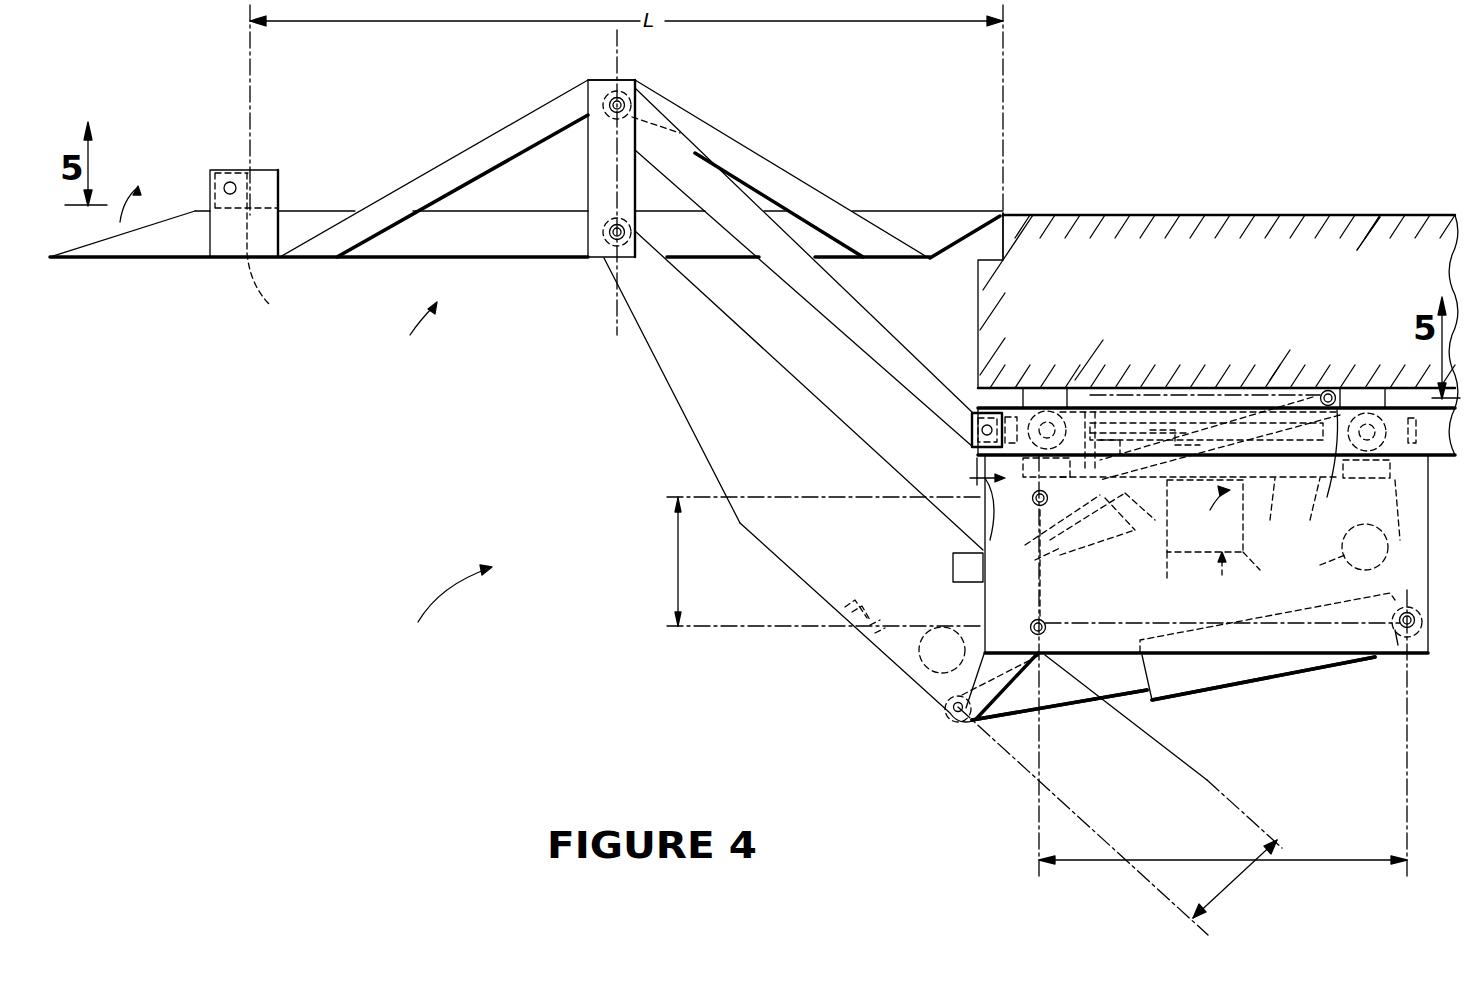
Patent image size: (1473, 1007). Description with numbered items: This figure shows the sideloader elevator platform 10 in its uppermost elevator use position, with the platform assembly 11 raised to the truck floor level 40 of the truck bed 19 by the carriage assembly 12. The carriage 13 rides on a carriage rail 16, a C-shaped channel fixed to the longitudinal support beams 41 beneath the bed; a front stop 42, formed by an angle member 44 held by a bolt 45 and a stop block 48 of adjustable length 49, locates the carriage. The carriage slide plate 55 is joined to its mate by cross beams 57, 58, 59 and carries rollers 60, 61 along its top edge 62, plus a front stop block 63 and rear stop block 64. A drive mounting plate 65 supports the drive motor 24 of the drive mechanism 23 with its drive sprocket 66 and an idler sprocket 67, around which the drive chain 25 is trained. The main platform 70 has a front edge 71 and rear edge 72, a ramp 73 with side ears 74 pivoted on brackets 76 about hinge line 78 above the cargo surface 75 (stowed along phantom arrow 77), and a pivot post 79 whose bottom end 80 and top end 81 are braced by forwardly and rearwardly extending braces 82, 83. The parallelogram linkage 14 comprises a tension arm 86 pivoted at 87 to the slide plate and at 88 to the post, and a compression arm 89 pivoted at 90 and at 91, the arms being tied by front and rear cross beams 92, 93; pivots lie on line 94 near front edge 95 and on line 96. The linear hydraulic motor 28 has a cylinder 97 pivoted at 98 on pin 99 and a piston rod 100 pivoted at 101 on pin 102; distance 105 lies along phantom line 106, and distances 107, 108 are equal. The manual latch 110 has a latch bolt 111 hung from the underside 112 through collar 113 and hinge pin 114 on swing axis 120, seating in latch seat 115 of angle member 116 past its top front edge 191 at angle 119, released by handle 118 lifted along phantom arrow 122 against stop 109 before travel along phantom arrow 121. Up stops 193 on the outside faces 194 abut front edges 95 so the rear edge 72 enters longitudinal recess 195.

The sideloader elevator platform 10 is at (446, 611).
The platform assembly 11 is at (412, 327).
The carriage assembly 12 is at (980, 787).
The carriage 13 is at (1326, 658).
The parallelogram linkage 14 is at (680, 412).
The carriage rail 16 is at (1450, 458).
The truck bed 19 is at (1395, 225).
The drive mechanism 23 is at (1222, 576).
The drive motor 24 is at (1264, 572).
The drive chain 25 is at (1307, 511).
The linear hydraulic motor 28 is at (1235, 678).
The truck floor level 40 is at (1260, 215).
The longitudinal support beam 41 is at (1063, 385).
The front stop 42 is at (972, 440).
The angle member 44 is at (972, 416).
The bolt 45 is at (980, 428).
The stop block 48 is at (1010, 390).
The length of stop block 49 is at (982, 510).
The carriage slide plate 55 is at (1285, 640).
The cross beam 57 is at (1098, 539).
The cross beam 58 is at (1402, 510).
The cross beam 59 is at (1334, 571).
The roller 60 is at (1052, 385).
The roller 61 is at (1392, 385).
The top edge of slide plate 62 is at (1368, 385).
The front stop block 63 is at (1037, 385).
The rear stop block 64 is at (1412, 400).
The drive mounting plate 65 is at (1264, 511).
The drive sprocket 66 is at (1228, 385).
The idler sprocket 67 is at (1150, 385).
The main platform 70 is at (530, 243).
The front edge of main platform 71 is at (271, 295).
The rear edge of main platform 72 is at (993, 213).
The ramp 73 is at (158, 245).
The side ear 74 is at (215, 178).
The cargo surface 75 is at (540, 210).
The bracket 76 is at (278, 170).
The phantom arrow 77 is at (134, 207).
The hinge line 78 is at (230, 182).
The pivot post 79 is at (598, 76).
The bottom end of pivot post 80 is at (590, 260).
The top end of pivot post 81 is at (627, 80).
The forwardly extending brace 82 is at (420, 183).
The rearwardly extending brace 83 is at (770, 173).
The tension arm 86 is at (833, 302).
The pivot connection 87 is at (993, 590).
The pivot connection 88 is at (625, 105).
The compression arm 89 is at (805, 536).
The pivot connection 90 is at (1048, 625).
The pivot connection 91 is at (630, 232).
The front cross beam 92 is at (873, 607).
The rear cross beam 93 is at (913, 670).
The line 94 is at (1045, 578).
The front edge of carriage slide plate 95 is at (985, 600).
The line 96 is at (613, 163).
The cylinder 97 is at (1195, 695).
The pivot connection 98 is at (1410, 603).
The pin 99 is at (1418, 628).
The piston rod 100 is at (1088, 698).
The pivot connection 101 is at (950, 712).
The pin 102 is at (955, 720).
The distance 105 is at (1310, 863).
The phantom line 106 is at (1222, 622).
The distance 107 is at (678, 573).
The distance 108 is at (1227, 890).
The stop 109 is at (1060, 550).
The manual latch 110 is at (1215, 345).
The latch bolt 111 is at (1209, 507).
The underside of truck bed 112 is at (1325, 385).
The collar 113 is at (1350, 385).
The hinge pin 114 is at (1328, 500).
The latch seat 115 is at (1140, 515).
The angle member 116 is at (1090, 385).
The handle 118 is at (1184, 570).
The angle 119 is at (1217, 423).
The swing axis 120 is at (1361, 541).
The phantom arrow 121 is at (1206, 516).
The phantom arrow 122 is at (1008, 548).
The top front edge of latch angle 191 is at (1130, 385).
The up stop 193 is at (955, 572).
The outside face of compression arm 194 is at (865, 556).
The longitudinal recess 195 is at (1003, 215).